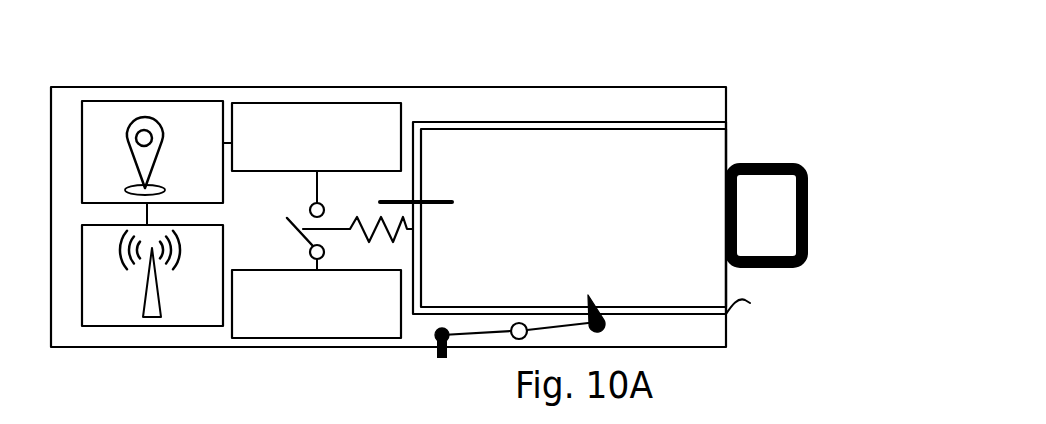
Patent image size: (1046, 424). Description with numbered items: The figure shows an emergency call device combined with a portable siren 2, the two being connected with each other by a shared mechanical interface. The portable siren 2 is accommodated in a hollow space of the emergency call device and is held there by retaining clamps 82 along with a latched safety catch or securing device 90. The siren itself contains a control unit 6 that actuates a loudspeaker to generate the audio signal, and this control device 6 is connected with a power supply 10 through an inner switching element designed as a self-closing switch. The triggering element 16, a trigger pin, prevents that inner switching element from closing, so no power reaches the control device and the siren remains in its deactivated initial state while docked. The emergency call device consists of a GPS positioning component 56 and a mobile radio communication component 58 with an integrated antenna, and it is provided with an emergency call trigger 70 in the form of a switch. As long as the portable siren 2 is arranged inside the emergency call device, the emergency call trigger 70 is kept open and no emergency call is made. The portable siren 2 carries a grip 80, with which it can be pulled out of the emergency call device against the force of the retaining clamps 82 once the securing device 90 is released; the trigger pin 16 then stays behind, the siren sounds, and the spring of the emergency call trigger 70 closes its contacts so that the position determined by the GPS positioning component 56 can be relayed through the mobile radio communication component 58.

The portable siren 2 is at (581, 218).
The control unit 6 is at (316, 137).
The power supply 10 is at (316, 304).
The triggering element 16 is at (441, 202).
The GPS positioning component 56 is at (163, 117).
The mobile radio communication component 58 is at (127, 313).
The emergency call trigger 70 is at (298, 241).
The grip 80 is at (780, 163).
The retaining clamps 82 is at (748, 128).
The securing device 90 is at (497, 330).